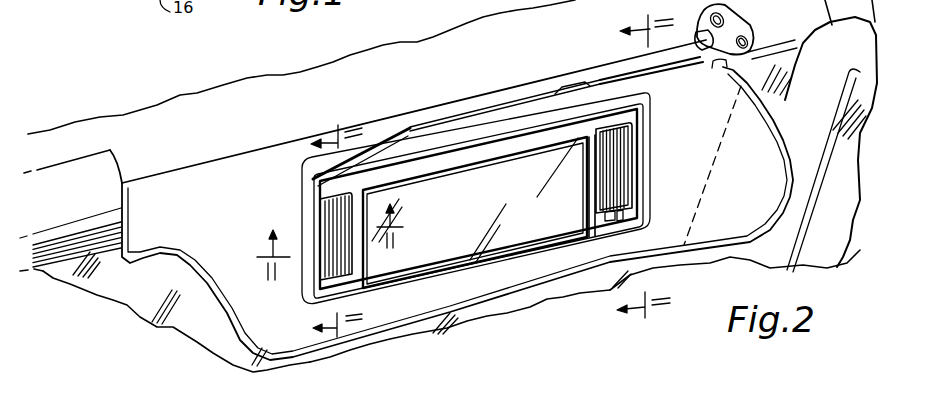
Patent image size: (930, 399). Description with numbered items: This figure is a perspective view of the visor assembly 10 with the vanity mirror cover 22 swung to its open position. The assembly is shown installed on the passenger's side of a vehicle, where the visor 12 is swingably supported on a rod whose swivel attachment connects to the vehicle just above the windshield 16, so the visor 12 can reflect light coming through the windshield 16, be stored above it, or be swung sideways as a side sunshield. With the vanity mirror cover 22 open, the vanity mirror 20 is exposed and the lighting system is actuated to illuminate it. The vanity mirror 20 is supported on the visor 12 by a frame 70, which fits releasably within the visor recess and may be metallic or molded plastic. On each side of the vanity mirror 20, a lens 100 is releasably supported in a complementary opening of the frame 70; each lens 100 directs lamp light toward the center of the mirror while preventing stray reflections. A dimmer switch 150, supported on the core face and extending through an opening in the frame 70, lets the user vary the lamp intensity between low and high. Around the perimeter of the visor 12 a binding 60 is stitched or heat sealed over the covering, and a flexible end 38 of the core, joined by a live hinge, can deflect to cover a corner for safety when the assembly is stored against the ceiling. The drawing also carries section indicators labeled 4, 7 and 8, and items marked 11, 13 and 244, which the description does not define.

The visor assembly 10 is at (228, 157).
The pivot arm 11 is at (710, 33).
The visor 12 is at (228, 331).
The mounting bracket 13 is at (738, 18).
The vehicle windshield 16 is at (93, 298).
The vanity mirror 20 is at (652, 188).
The vanity mirror cover 22 is at (455, 115).
The flexible end 38 is at (710, 255).
The binding 60 is at (344, 340).
The frame 70 is at (305, 286).
The lens 100 is at (320, 214).
The dimmer switch 150 is at (625, 213).
The lamp lens 244 is at (642, 150).
The section line 4- 4 is at (628, 175).
The section line 7- 7 is at (338, 234).
The section line 8- 8 is at (320, 234).